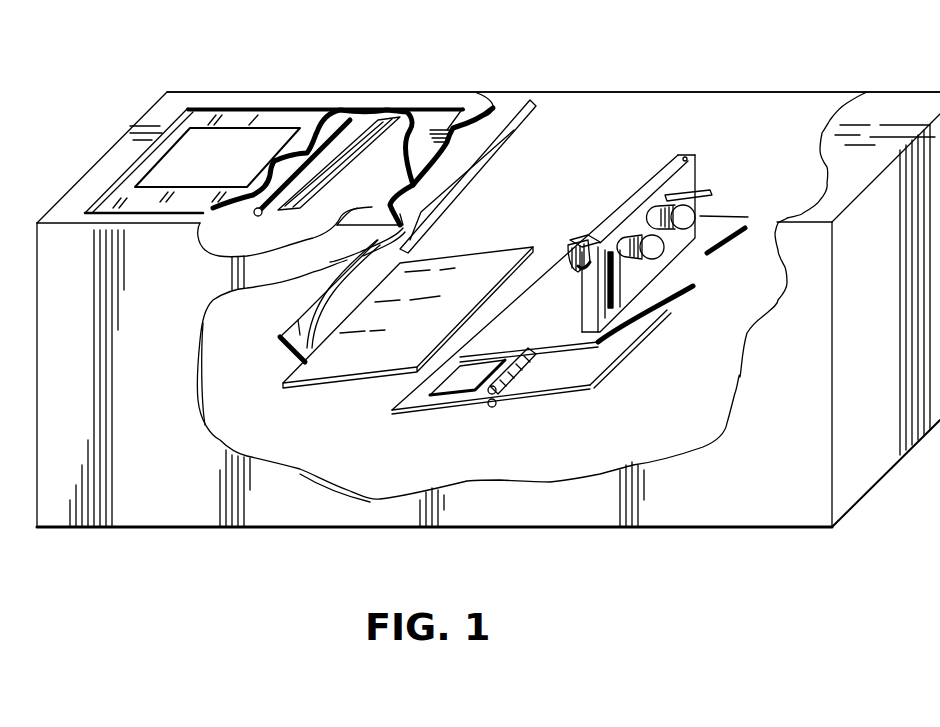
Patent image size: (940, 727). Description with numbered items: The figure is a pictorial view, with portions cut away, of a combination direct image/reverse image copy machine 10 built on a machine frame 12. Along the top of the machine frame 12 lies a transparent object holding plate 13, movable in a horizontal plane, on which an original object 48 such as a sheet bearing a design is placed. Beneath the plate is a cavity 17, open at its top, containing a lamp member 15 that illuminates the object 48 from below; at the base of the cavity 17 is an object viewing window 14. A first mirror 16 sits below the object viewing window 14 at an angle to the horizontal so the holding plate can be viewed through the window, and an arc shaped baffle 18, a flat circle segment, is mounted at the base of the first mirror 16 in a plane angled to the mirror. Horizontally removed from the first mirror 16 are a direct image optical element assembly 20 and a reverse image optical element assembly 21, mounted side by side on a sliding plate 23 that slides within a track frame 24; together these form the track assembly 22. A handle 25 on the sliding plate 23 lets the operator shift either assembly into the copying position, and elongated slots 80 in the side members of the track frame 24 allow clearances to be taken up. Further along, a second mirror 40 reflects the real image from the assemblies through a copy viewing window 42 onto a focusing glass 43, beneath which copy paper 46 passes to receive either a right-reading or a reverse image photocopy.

The combination direct image/reverse image copy machine 10 is at (203, 526).
The machine frame 12 is at (590, 92).
The transparent object holding plate 13 is at (143, 167).
The object viewing window 14 is at (297, 213).
The lamp member 15 is at (250, 222).
The first mirror 16 is at (298, 320).
The cavity 17 is at (257, 237).
The arc shaped baffle 18 is at (349, 311).
The direct image optical element assembly 20 is at (683, 221).
The reverse image optical element assembly 21 is at (657, 250).
The track assembly 22 is at (655, 181).
The sliding plate 23 is at (648, 222).
The track frame 24 is at (605, 233).
The handle 25 is at (707, 187).
The second mirror 40 is at (517, 130).
The copy viewing window 42 is at (392, 347).
The focusing glass 43 is at (457, 383).
The copy paper 46 is at (585, 372).
The original object 48 is at (243, 140).
The elongated slots 80 is at (585, 270).